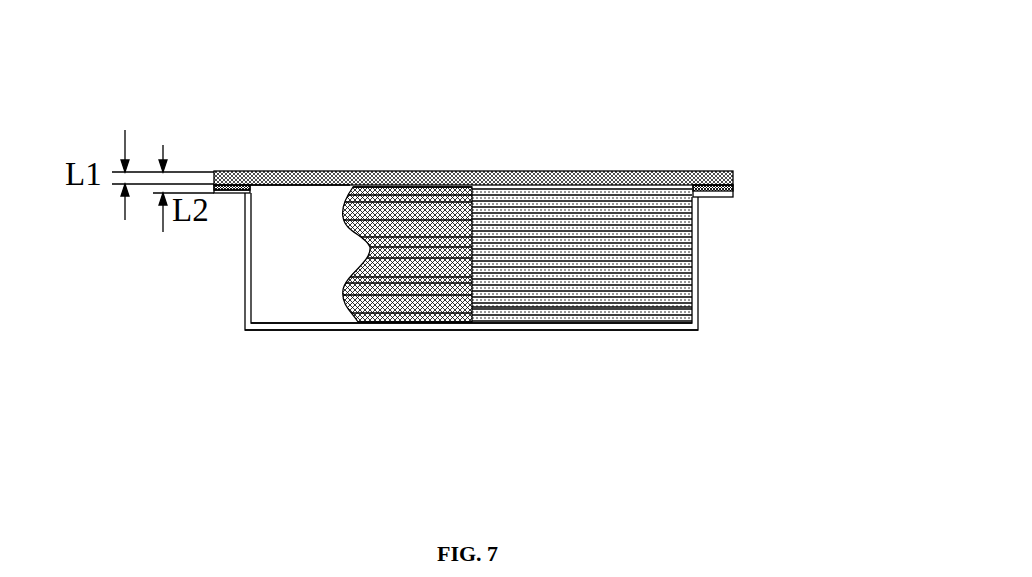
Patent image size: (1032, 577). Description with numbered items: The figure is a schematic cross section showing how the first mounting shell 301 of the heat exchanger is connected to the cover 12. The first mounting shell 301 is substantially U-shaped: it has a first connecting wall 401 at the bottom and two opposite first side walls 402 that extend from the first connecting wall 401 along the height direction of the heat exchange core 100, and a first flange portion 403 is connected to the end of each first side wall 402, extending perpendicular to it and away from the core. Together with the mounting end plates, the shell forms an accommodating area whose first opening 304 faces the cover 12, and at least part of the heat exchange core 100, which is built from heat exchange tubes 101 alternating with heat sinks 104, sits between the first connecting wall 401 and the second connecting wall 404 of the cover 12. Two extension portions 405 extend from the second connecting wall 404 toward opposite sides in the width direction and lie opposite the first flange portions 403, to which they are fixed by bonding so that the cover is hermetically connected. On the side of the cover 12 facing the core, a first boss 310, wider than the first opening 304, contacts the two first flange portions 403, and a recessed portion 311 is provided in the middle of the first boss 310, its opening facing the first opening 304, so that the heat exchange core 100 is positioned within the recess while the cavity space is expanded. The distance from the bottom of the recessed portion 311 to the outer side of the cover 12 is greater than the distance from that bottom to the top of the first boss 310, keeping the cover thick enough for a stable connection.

The cover 12 is at (519, 157).
The heat exchange core 100 is at (547, 246).
The heat exchange tube 101 is at (545, 307).
The heat sink 104 is at (626, 200).
The first mounting shell 301 is at (319, 333).
The first opening 304 is at (310, 186).
The first boss 310 is at (250, 192).
The recessed portion 311 is at (268, 187).
The first connecting wall 401 is at (382, 322).
The first side wall 402 is at (247, 275).
The first flange portion 403 is at (223, 197).
The second connecting wall 404 is at (368, 171).
The extension portion 405 is at (226, 170).